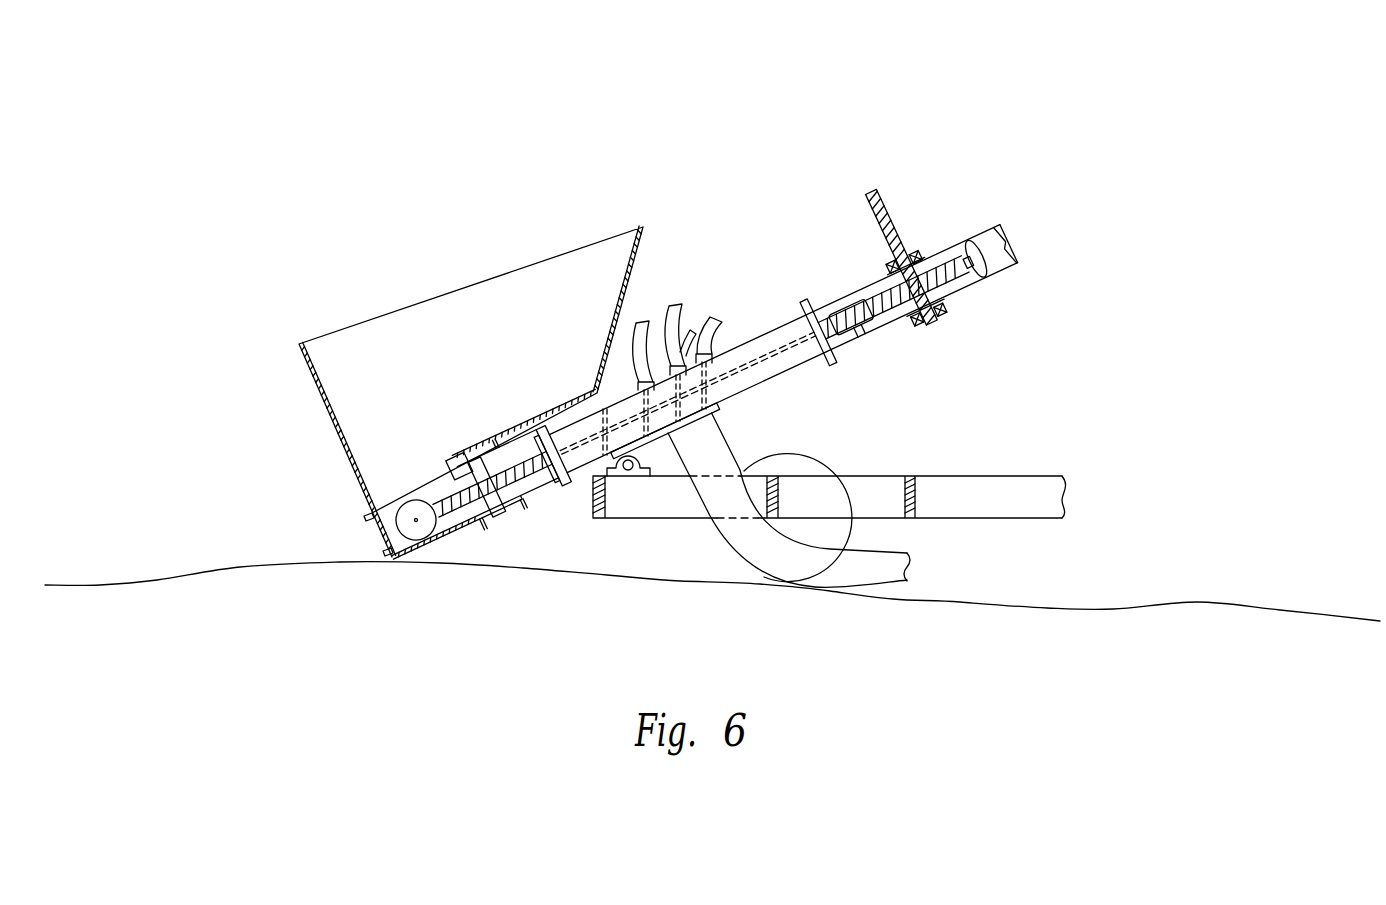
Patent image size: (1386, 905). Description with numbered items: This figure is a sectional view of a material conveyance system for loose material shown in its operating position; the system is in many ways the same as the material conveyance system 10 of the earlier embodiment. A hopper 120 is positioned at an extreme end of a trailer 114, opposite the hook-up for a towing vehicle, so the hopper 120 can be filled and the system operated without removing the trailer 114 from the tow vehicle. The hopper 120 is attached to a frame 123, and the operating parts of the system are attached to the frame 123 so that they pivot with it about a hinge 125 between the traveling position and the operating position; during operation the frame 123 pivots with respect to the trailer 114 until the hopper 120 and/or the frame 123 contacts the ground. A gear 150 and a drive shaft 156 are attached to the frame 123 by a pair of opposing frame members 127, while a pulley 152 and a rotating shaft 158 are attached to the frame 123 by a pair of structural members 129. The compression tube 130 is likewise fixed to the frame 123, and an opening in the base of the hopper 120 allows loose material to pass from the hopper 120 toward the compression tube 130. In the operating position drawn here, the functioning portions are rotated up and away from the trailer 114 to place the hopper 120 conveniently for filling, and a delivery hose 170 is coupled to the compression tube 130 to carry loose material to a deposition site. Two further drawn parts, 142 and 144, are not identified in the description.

The material conveyance system 10 is at (262, 112).
The trailer 114 is at (1010, 475).
The hopper 120 is at (297, 372).
The frame 123 is at (993, 267).
The hinge 125 is at (652, 482).
The frame members 127 is at (890, 270).
The structural members 129 is at (482, 527).
The compression tube 130 is at (793, 375).
The housing 142 is at (370, 517).
The flange 144 is at (822, 320).
The gear 150 is at (887, 308).
The pulley 152 is at (547, 490).
The drive shaft 156 is at (880, 198).
The rotating shaft 158 is at (500, 512).
The delivery hose 170 is at (898, 566).